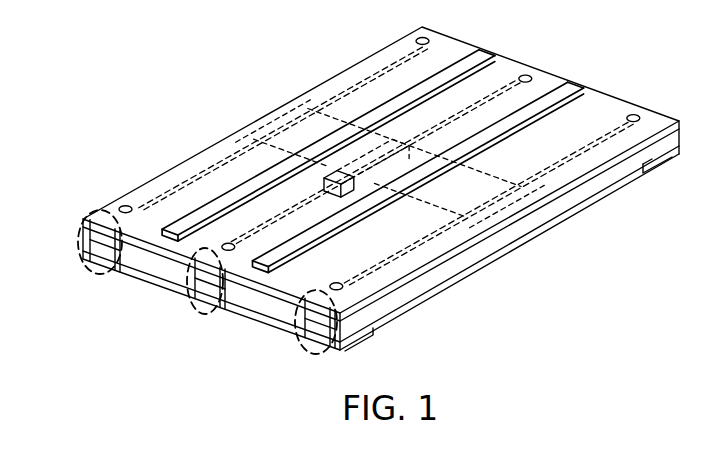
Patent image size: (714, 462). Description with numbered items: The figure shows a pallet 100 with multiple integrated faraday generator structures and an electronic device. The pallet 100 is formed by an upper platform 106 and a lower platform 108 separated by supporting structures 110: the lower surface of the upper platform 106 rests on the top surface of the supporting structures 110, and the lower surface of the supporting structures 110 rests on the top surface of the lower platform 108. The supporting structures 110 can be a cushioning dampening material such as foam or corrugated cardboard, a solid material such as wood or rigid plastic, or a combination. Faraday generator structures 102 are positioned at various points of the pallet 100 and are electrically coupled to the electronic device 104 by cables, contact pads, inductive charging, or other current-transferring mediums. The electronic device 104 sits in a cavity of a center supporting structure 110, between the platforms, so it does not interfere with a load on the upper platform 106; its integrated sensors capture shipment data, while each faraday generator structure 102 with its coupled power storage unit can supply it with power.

The pallet 100 is at (128, 54).
The faraday generator structure 102 is at (423, 40).
The electronic device 104 is at (406, 150).
The upper platform 106 is at (300, 96).
The lower platform 108 is at (247, 318).
The supporting structure 110 is at (318, 352).